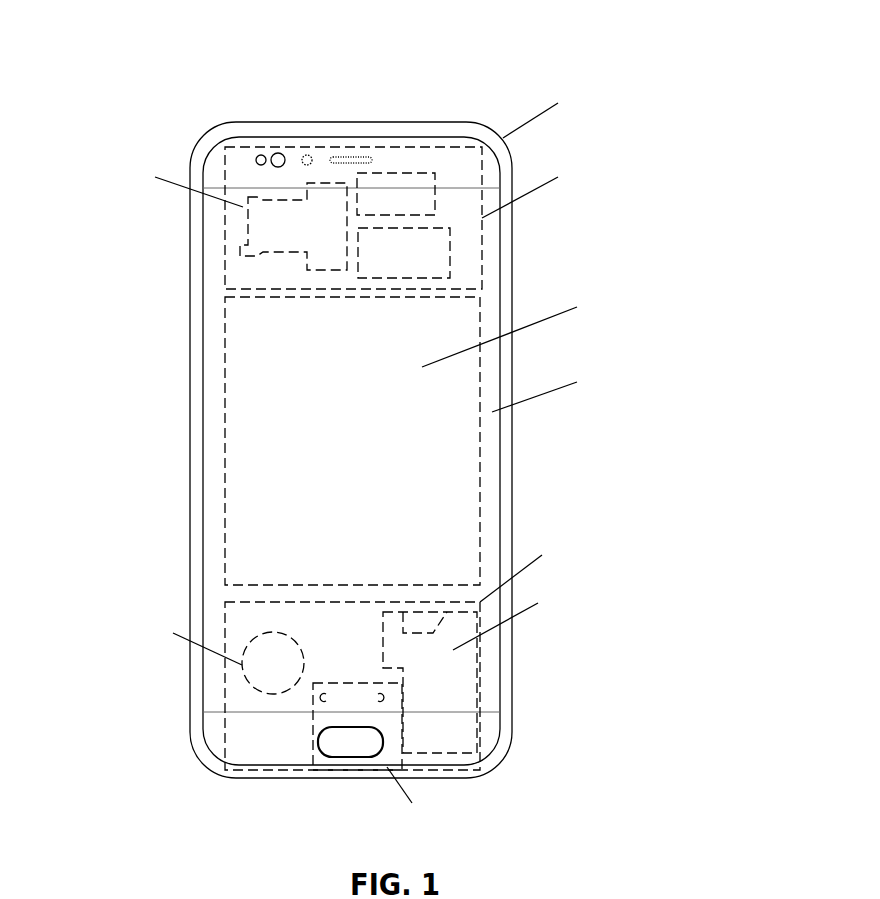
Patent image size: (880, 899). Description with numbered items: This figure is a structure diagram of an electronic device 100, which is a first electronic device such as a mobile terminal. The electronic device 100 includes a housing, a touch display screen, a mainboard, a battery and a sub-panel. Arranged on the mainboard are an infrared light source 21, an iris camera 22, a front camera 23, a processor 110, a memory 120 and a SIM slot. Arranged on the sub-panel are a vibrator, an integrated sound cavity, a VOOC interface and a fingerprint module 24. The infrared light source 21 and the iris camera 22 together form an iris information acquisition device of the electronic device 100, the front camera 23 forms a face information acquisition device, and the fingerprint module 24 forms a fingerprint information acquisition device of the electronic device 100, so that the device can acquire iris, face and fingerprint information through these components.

The electronic device 100 is at (401, 56).
The infrared light source 21 is at (257, 155).
The iris camera 22 is at (278, 153).
The front camera 23 is at (310, 156).
The processor 110 is at (385, 173).
The memory 120 is at (450, 262).
The fingerprint module 24 is at (348, 745).